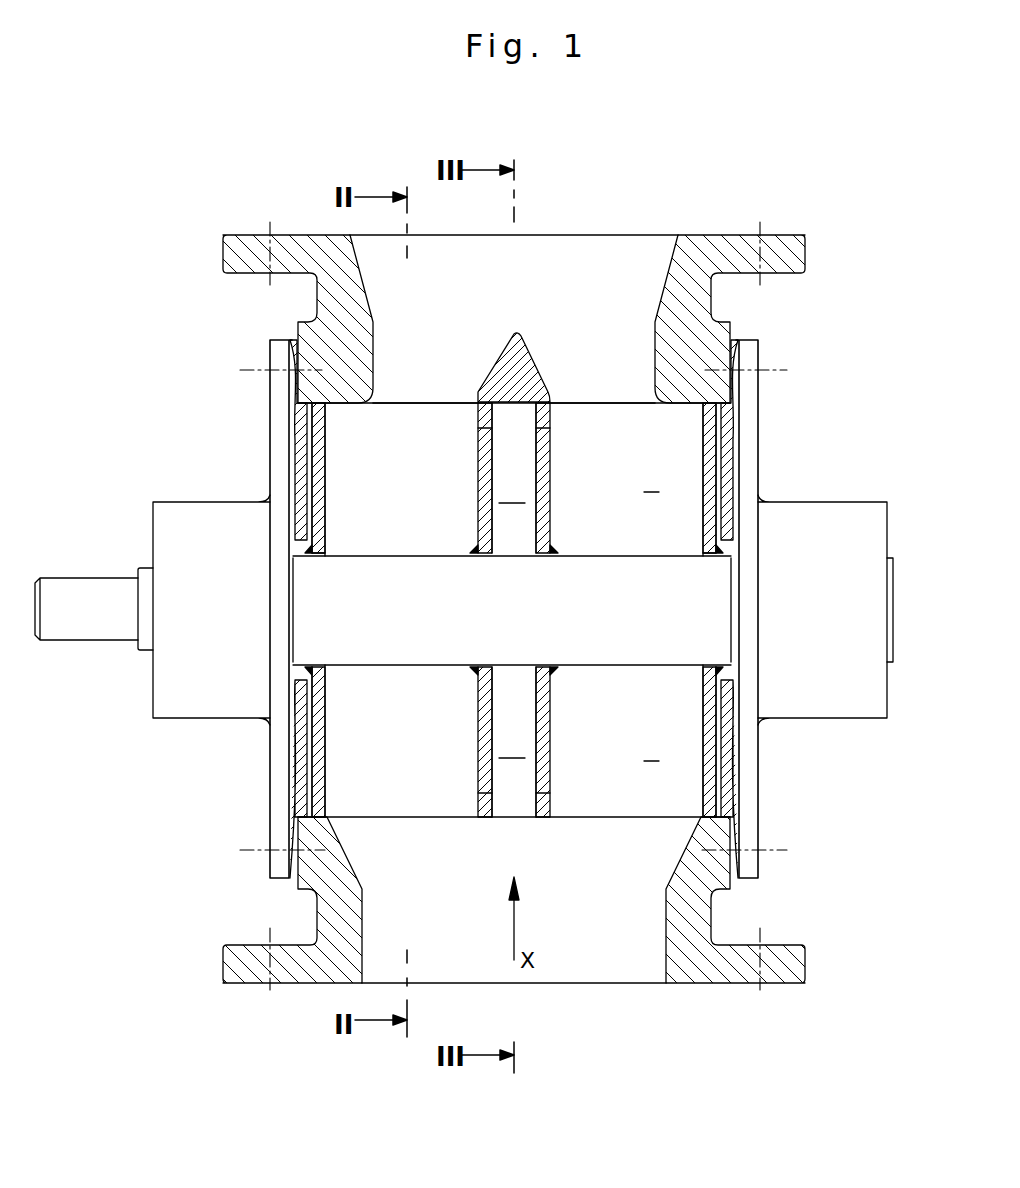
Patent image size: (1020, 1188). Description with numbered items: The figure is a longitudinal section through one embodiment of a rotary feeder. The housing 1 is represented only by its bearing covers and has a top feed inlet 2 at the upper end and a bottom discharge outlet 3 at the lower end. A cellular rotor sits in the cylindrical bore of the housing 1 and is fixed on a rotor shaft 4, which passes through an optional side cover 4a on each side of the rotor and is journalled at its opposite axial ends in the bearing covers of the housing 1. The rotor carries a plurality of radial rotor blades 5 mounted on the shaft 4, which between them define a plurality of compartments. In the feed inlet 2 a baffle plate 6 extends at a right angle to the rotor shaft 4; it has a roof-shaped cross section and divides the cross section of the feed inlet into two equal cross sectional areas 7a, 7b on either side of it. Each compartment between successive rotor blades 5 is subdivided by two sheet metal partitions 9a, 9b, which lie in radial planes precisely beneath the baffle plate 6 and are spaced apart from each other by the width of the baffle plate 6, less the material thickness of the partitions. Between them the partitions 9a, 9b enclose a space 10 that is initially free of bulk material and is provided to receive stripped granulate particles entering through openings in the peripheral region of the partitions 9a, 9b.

The housing 1 is at (268, 424).
The top feed inlet 2 is at (718, 333).
The bottom discharge outlet 3 is at (698, 923).
The rotor shaft 4 is at (399, 553).
The side cover 4a is at (302, 782).
The radial rotor blades 5 is at (514, 610).
The baffle plate 6 is at (531, 357).
The cross sectional area 7a is at (411, 398).
The cross sectional area 7b is at (596, 399).
The partition 9a is at (478, 447).
The partition 9b is at (550, 447).
The bulk material free space 10 is at (514, 610).